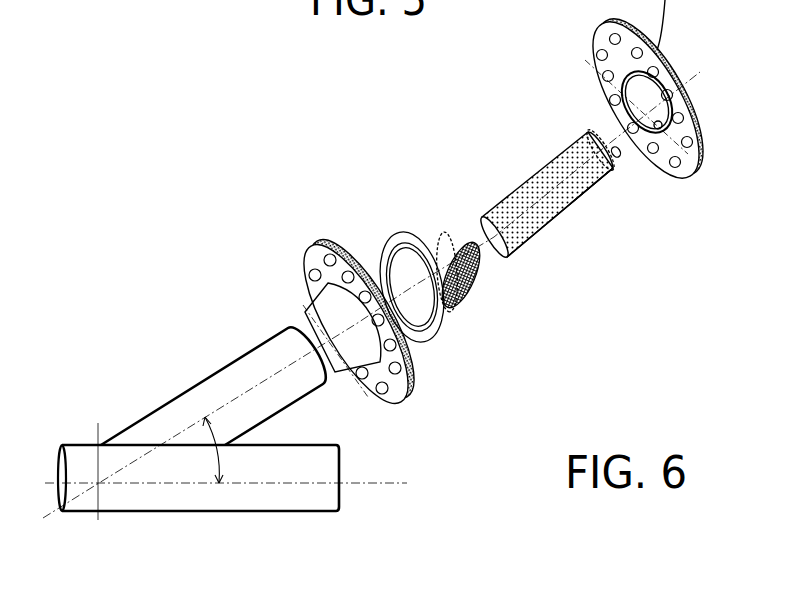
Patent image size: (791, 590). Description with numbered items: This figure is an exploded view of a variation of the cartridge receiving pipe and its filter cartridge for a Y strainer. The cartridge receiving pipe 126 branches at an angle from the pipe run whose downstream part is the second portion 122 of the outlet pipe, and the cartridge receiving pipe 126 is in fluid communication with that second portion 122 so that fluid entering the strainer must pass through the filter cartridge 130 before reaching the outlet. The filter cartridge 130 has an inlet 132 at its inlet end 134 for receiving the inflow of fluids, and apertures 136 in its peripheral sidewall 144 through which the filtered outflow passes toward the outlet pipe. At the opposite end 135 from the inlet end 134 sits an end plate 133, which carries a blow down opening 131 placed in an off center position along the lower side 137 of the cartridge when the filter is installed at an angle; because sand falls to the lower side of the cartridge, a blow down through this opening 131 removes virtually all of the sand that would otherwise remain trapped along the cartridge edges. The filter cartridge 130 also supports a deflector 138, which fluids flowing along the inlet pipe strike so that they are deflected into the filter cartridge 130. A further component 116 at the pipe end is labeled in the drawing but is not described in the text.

The inlet end of main conduit 116 is at (58, 467).
The second portion of outlet pipe 122 is at (339, 502).
The cartridge receiving pipe 126 is at (165, 410).
The filter cartridge 130 is at (572, 206).
The blow down opening 131 is at (619, 154).
The inlet 132 is at (481, 236).
The end plate 133 is at (590, 132).
The inlet end 134 is at (510, 253).
The opposite end 135 is at (603, 178).
The apertures 136 is at (530, 222).
The lower side 137 is at (610, 170).
The deflector 138 is at (472, 291).
The peripheral sidewall 144 is at (523, 190).